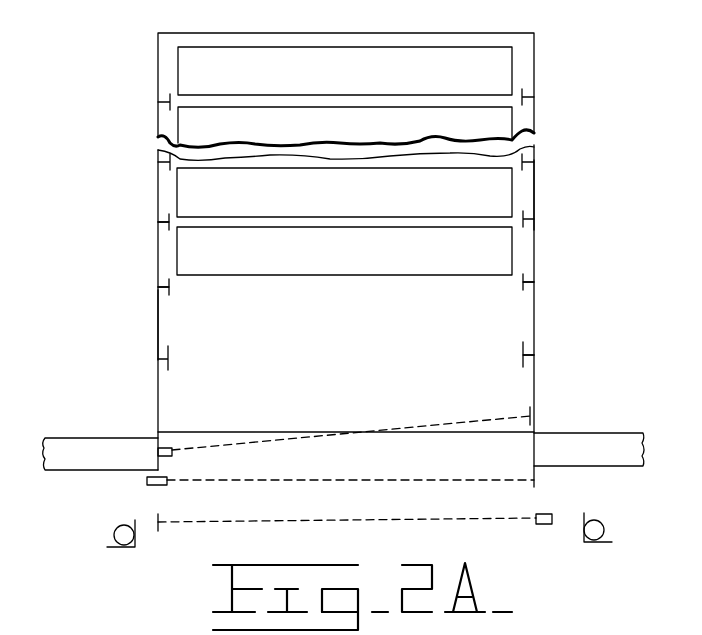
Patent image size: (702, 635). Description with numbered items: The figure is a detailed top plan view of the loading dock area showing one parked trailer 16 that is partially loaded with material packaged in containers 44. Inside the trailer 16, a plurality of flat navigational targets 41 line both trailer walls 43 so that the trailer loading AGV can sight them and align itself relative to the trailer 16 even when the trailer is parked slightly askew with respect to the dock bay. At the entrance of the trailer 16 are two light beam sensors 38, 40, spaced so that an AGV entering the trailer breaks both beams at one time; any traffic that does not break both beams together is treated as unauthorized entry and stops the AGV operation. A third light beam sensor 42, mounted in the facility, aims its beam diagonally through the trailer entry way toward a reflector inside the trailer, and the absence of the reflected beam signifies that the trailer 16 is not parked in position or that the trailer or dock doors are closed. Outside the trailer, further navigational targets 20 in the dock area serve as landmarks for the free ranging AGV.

The trailer 16 is at (341, 322).
The containers 44 is at (352, 82).
The navigational targets 41 is at (168, 223).
The trailer walls 43 is at (157, 330).
The third light beam sensor 42 is at (158, 450).
The light beam sensor 38 is at (147, 481).
The light beam sensor 40 is at (540, 514).
The navigational targets 20 is at (114, 534).